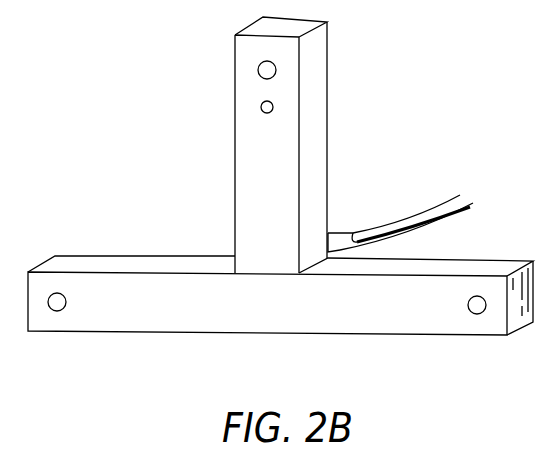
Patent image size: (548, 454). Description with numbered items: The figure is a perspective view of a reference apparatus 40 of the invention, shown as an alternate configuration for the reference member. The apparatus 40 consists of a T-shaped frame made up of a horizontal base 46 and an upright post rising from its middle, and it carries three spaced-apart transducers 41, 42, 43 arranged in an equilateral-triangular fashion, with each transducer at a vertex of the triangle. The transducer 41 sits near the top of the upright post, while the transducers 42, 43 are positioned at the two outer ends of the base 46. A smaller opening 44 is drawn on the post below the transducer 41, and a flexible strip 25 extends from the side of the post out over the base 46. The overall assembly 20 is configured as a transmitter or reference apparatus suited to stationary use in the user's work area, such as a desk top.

The fixture assembly 20 is at (43, 399).
The flexible strip 25 is at (397, 222).
The apparatus 40 is at (413, 79).
The transducer 41 is at (258, 67).
The transducer 42 is at (66, 306).
The transducer 43 is at (468, 311).
The small hole 44 is at (261, 106).
The base 46 is at (279, 306).